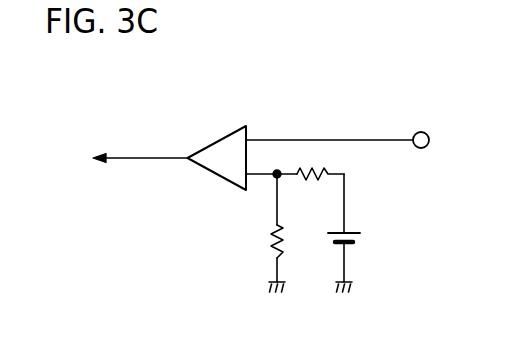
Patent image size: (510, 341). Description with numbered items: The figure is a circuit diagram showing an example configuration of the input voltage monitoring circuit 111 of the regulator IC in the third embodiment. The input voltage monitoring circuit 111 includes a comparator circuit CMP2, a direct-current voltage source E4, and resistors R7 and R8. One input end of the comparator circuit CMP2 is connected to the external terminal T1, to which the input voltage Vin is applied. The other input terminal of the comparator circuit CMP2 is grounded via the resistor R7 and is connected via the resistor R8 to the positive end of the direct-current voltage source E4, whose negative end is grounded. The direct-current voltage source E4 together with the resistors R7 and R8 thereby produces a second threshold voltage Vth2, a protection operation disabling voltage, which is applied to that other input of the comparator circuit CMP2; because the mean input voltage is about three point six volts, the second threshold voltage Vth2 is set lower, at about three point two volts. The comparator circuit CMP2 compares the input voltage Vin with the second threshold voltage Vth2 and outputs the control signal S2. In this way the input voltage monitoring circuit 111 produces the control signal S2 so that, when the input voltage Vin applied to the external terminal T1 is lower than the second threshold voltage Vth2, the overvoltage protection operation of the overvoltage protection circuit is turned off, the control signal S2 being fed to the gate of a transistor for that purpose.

The input voltage monitoring circuit 111 is at (142, 108).
The comparator circuit CMP2 is at (217, 142).
The control signal S2 is at (140, 153).
The external terminal T1 is at (418, 133).
The input voltage Vin is at (357, 128).
The second threshold voltage Vth2 is at (324, 163).
The resistor R8 is at (320, 189).
The resistor R7 is at (266, 233).
The direct-current voltage source E4 is at (331, 233).